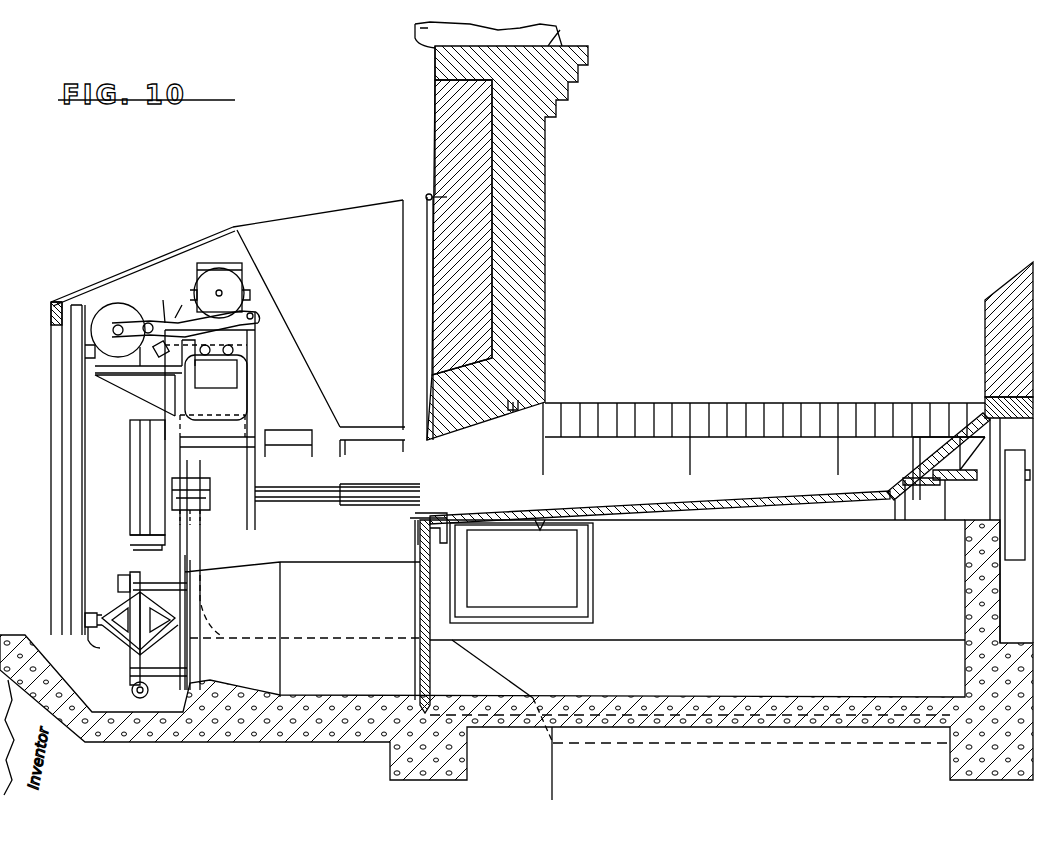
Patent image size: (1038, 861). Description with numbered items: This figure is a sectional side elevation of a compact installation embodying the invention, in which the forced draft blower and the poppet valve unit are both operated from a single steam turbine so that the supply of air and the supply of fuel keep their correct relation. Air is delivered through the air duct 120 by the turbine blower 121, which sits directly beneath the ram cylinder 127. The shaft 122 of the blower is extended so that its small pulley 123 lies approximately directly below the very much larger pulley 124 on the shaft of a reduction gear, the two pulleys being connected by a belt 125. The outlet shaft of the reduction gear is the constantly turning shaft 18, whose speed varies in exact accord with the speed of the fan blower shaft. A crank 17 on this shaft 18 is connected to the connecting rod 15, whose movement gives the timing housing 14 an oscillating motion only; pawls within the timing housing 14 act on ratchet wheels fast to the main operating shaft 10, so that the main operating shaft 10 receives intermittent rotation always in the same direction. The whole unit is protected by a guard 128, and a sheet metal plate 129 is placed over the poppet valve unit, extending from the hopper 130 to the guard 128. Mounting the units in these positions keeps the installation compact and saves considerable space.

The main operating shaft 10 is at (222, 294).
The timing housing 14 is at (221, 273).
The connecting rod 15 is at (158, 308).
The crank 17 is at (138, 334).
The constantly turning shaft 18 is at (117, 327).
The air duct 120 is at (348, 575).
The turbine blower 121 is at (256, 567).
The shaft 122 is at (98, 636).
The small pulley 123 is at (86, 612).
The larger pulley 124 is at (80, 400).
The belt 125 is at (74, 483).
The ram cylinder 127 is at (323, 494).
The guard 128 is at (53, 450).
The sheet metal plate 129 is at (233, 228).
The hopper 130 is at (383, 208).